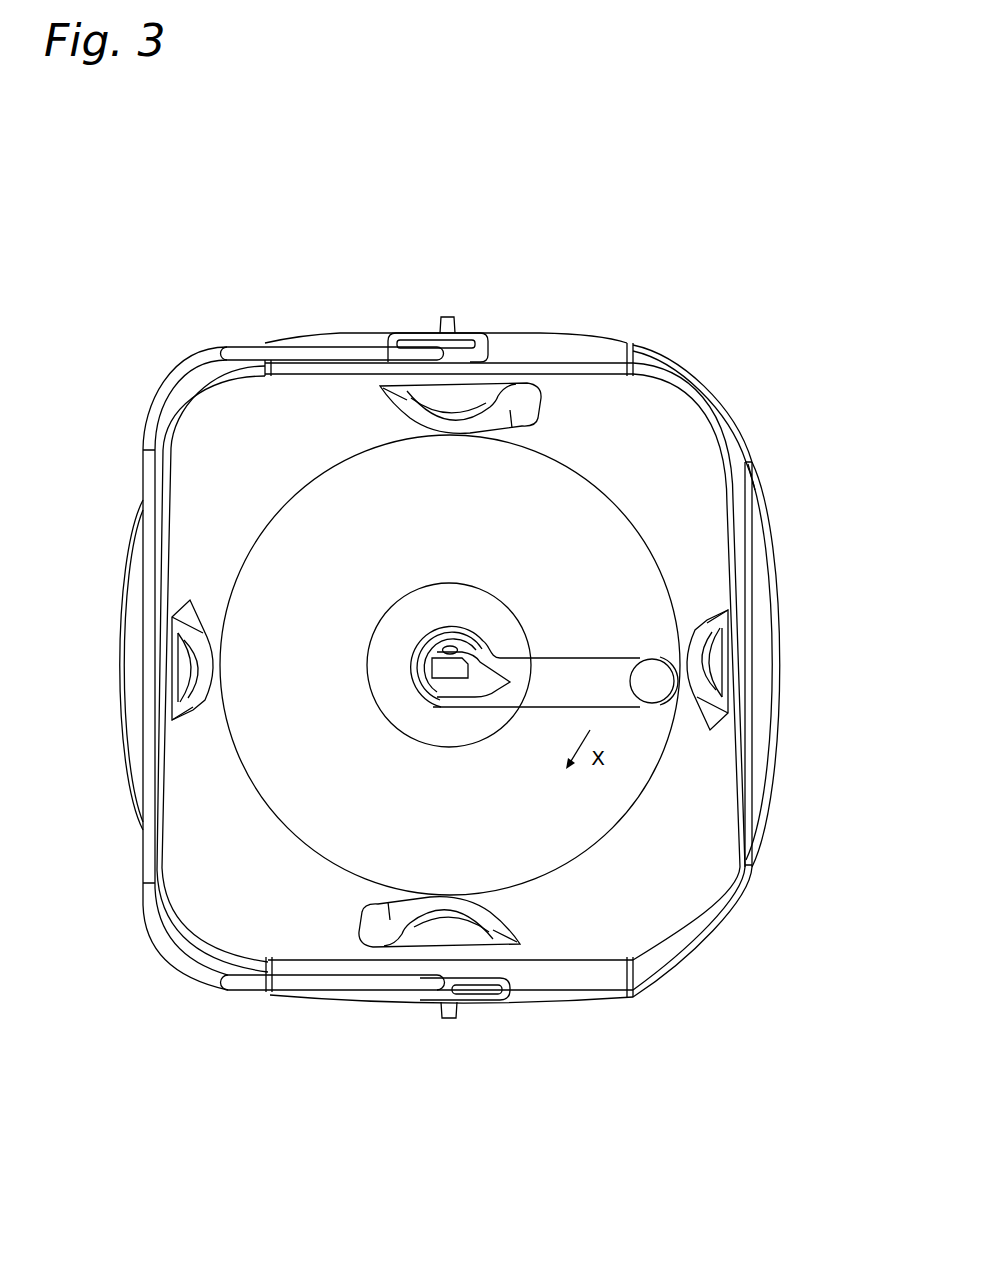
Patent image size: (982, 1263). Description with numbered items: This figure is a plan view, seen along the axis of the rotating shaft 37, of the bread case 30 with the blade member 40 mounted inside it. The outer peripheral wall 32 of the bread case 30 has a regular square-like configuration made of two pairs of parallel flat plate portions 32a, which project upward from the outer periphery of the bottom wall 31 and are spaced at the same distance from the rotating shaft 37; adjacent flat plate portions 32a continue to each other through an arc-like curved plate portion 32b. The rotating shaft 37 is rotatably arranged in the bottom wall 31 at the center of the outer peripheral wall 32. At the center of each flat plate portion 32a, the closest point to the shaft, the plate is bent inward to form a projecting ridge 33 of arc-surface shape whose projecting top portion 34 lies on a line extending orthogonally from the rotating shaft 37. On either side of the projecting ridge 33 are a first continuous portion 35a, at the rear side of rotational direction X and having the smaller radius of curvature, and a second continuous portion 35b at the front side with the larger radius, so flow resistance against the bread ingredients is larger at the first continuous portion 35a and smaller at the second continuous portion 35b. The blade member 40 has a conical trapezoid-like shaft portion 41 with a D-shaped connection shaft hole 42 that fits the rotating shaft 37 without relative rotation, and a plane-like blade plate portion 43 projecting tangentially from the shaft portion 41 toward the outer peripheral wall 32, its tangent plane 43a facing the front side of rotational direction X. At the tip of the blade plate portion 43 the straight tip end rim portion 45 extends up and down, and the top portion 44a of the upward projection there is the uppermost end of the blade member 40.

The bread case 30 is at (682, 353).
The bottom wall 31 is at (359, 497).
The outer peripheral wall 32 is at (553, 945).
The flat plate portion 32a is at (180, 762).
The curved plate portion 32b is at (216, 905).
The projecting ridge 33 is at (448, 400).
The projecting top portion 34 is at (447, 403).
The first continuous portion 35a is at (397, 398).
The second continuous portion 35b is at (510, 410).
The rotating shaft 37 is at (445, 667).
The blade member 40 is at (445, 714).
The shaft portion 41 is at (430, 644).
The connection shaft hole 42 is at (446, 650).
The blade plate portion 43 is at (566, 670).
The tangent plane 43a is at (551, 706).
The top portion 44a is at (690, 692).
The tip end rim portion 45 is at (657, 683).